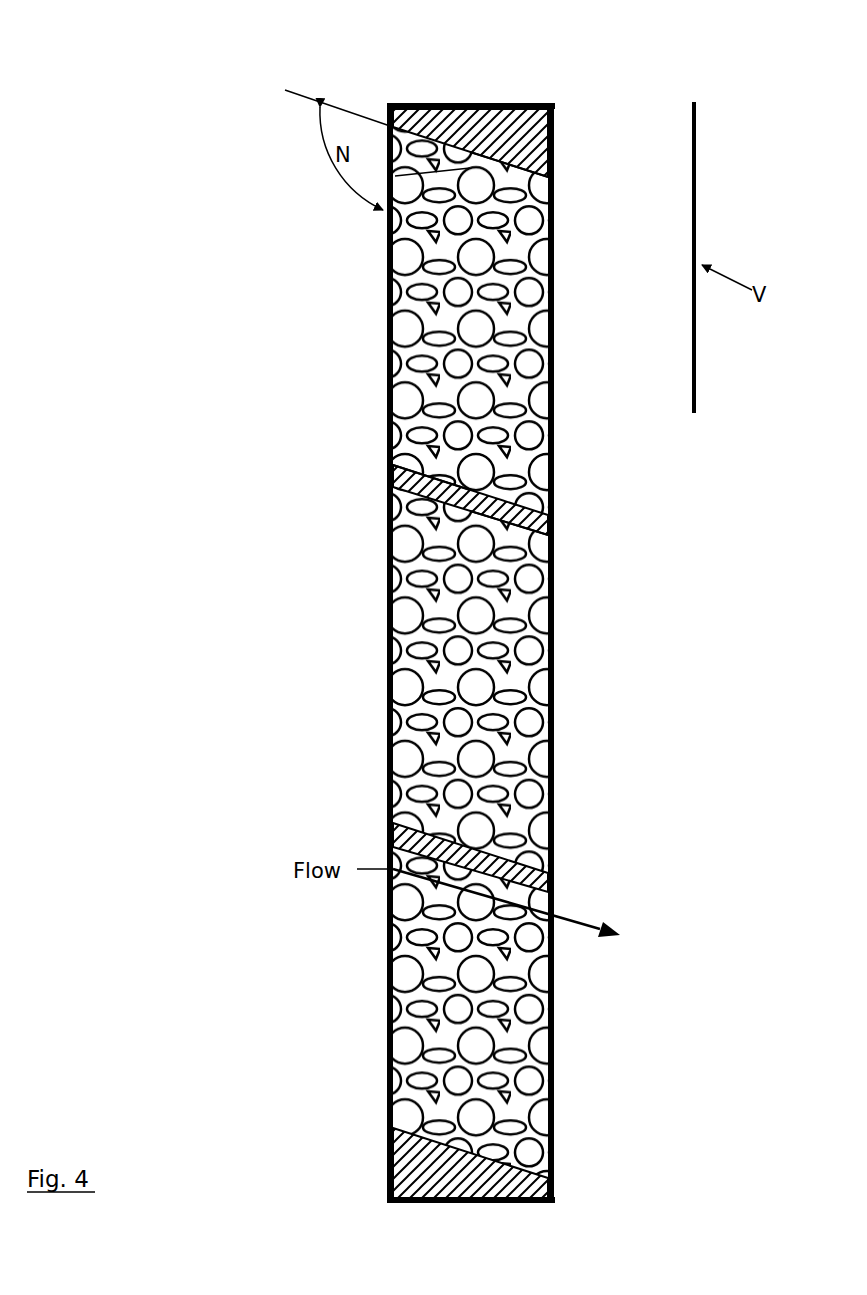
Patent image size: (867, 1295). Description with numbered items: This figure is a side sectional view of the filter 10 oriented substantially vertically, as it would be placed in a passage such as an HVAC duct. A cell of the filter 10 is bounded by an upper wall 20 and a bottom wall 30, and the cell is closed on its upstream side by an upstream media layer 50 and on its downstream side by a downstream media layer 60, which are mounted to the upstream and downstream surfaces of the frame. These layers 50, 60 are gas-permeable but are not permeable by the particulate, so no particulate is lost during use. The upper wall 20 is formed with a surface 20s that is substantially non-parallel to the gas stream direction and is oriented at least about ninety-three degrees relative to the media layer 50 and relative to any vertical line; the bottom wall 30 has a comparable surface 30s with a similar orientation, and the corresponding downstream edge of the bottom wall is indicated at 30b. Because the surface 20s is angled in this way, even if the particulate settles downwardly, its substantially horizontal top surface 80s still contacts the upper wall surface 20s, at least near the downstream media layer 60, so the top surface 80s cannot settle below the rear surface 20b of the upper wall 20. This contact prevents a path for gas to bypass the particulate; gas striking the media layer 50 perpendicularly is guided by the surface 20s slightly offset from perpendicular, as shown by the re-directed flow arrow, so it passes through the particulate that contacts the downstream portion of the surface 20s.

The filter 10 is at (569, 75).
The upper wall 20 is at (555, 126).
The upper wall surface 20s is at (440, 125).
The rear surface of the upper wall 20b is at (555, 180).
The bottom wall 30 is at (555, 518).
The surface of the bottom wall 30s is at (425, 497).
The bottom edge of second screen layer 30b is at (555, 540).
The upstream media layer 50 is at (388, 260).
The downstream media layer 60 is at (555, 675).
The top surface of the particulate 80s is at (422, 170).